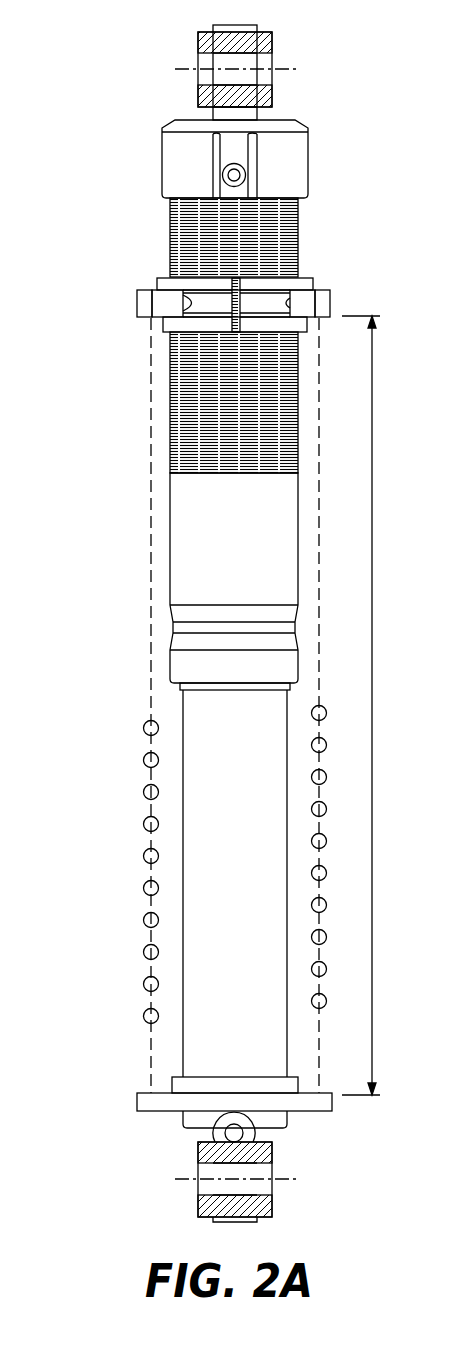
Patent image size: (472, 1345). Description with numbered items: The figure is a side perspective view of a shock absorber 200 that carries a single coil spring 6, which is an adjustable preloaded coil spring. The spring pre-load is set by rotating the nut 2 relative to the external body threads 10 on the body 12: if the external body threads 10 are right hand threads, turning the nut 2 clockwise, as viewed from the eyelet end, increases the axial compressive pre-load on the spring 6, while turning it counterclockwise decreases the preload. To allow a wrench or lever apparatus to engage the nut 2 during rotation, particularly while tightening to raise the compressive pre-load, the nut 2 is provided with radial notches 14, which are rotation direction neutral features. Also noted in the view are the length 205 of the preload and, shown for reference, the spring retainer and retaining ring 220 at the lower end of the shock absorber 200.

The shock absorber 200 is at (128, 82).
The external body threads 10 is at (168, 230).
The radial notches 14 is at (140, 302).
The nut 2 is at (337, 302).
The body 12 is at (168, 498).
The single coil spring 6 is at (144, 857).
The length of the preload 205 is at (372, 622).
The spring retainer and retaining ring 220 is at (335, 1099).